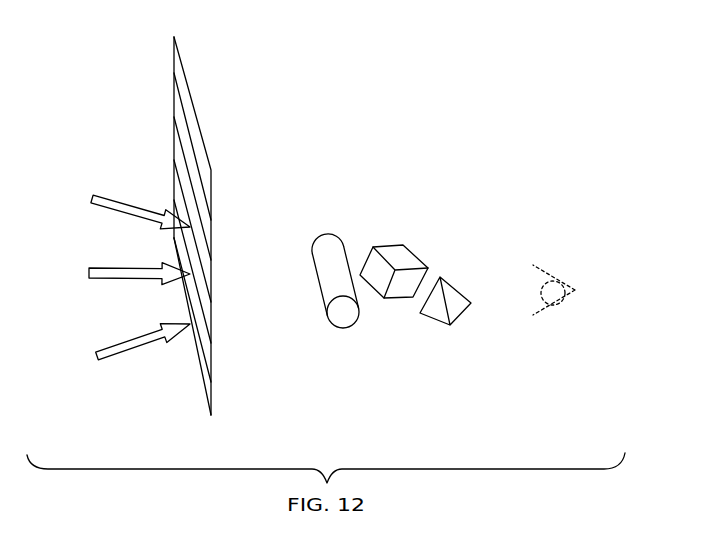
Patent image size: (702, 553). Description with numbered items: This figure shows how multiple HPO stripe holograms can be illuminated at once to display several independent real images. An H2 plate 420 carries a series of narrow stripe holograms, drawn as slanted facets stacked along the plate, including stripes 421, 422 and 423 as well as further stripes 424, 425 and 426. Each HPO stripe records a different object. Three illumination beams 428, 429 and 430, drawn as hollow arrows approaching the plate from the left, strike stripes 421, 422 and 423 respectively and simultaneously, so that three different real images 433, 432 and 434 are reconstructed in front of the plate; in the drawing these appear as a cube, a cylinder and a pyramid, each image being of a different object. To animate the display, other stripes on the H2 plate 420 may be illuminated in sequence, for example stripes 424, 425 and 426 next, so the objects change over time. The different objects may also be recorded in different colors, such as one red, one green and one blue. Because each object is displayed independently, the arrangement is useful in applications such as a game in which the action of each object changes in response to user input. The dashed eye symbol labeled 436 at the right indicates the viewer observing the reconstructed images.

The H2 plate 420 is at (188, 244).
The HPO stripe hologram 421 is at (183, 407).
The HPO stripe hologram 422 is at (212, 343).
The HPO stripe hologram 423 is at (212, 302).
The HPO stripe hologram 424 is at (212, 260).
The HPO stripe hologram 425 is at (212, 222).
The HPO stripe hologram 426 is at (211, 177).
The illumination beam 428 is at (97, 358).
The illumination beam 429 is at (92, 268).
The illumination beam 430 is at (100, 195).
The real image 432 is at (328, 238).
The real image 433 is at (408, 258).
The real image 434 is at (453, 295).
The viewer eye 436 is at (565, 270).